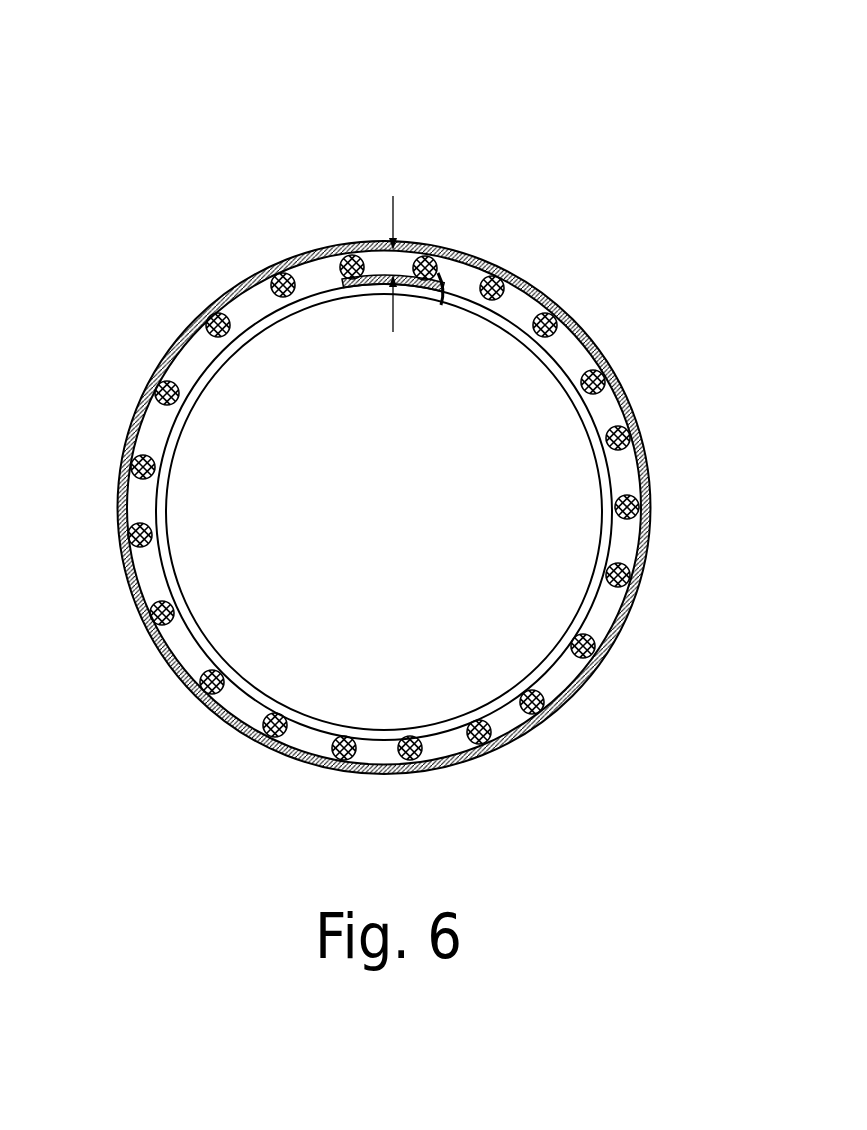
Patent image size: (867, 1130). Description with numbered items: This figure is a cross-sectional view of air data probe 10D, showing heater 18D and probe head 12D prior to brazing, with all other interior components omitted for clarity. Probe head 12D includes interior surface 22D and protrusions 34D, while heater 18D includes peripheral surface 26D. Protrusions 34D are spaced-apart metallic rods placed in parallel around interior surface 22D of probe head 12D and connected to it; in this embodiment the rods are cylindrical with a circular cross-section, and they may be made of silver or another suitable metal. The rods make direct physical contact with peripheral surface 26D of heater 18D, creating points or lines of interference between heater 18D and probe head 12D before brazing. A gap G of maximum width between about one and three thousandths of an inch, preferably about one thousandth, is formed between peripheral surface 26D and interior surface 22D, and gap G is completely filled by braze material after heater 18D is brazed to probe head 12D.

The air data probe 10D is at (125, 108).
The probe head 12D is at (628, 653).
The heater 18D is at (605, 463).
The interior surface 22D is at (622, 616).
The peripheral surface 26D is at (613, 481).
The protrusions 34D is at (620, 440).
The gap G is at (393, 262).